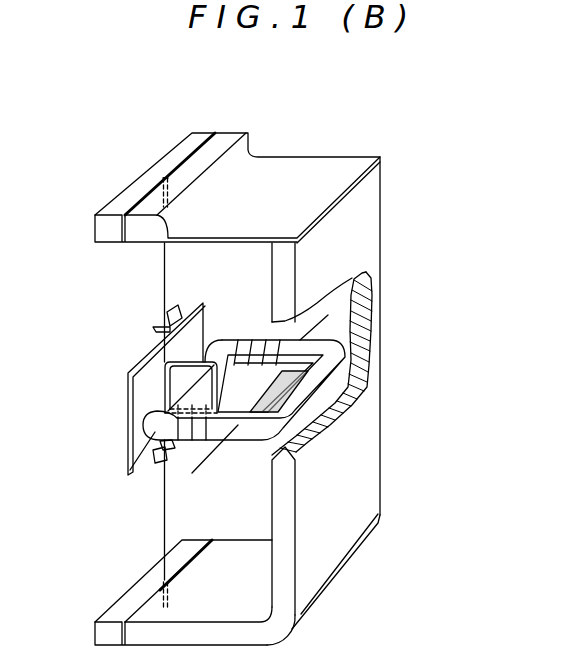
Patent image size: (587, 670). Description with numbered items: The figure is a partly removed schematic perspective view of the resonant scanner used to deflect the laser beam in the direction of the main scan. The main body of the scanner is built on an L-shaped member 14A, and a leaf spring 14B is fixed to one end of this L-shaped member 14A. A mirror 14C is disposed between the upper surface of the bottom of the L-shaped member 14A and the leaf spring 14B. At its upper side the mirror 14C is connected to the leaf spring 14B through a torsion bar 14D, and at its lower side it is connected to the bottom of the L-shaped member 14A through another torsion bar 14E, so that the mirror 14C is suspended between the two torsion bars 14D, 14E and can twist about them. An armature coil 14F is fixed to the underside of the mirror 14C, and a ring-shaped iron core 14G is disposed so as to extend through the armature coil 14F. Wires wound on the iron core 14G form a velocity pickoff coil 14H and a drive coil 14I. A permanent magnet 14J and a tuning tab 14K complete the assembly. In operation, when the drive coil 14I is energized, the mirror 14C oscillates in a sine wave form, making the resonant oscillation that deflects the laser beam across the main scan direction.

The L-shaped member 14A is at (337, 563).
The leaf spring 14B is at (257, 170).
The mirror 14C is at (128, 472).
The torsion bar 14D is at (163, 286).
The torsion bar 14E is at (165, 540).
The armature coil 14F is at (141, 389).
The ring-shaped iron core 14G is at (330, 364).
The velocity pickoff coil 14H is at (326, 323).
The drive coil 14I is at (225, 460).
The permanent magnet 14J is at (282, 408).
The tuning tab 14K is at (173, 310).